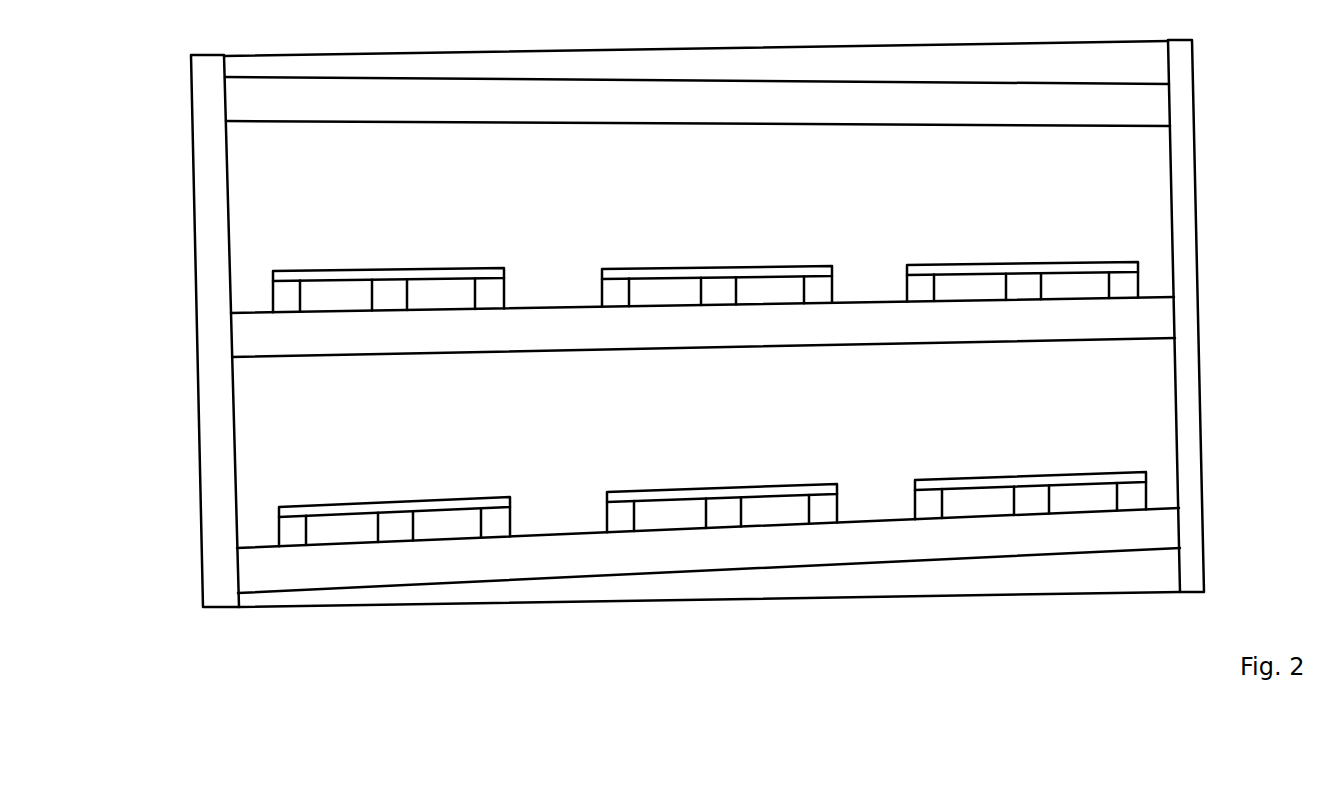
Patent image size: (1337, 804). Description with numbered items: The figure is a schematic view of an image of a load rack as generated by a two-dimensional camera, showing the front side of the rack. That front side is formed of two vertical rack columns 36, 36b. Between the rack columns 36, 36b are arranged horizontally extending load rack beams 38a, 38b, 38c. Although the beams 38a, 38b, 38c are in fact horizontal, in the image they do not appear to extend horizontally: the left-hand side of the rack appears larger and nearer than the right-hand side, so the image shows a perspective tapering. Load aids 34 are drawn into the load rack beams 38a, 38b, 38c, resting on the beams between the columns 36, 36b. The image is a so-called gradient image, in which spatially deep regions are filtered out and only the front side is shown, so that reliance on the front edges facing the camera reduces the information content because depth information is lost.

The load aid 34 is at (395, 525).
The vertical rack column 36 is at (205, 357).
The vertical rack column 36b is at (1177, 255).
The load rack beam 38a is at (450, 103).
The load rack beam 38b is at (538, 329).
The load rack beam 38c is at (513, 562).